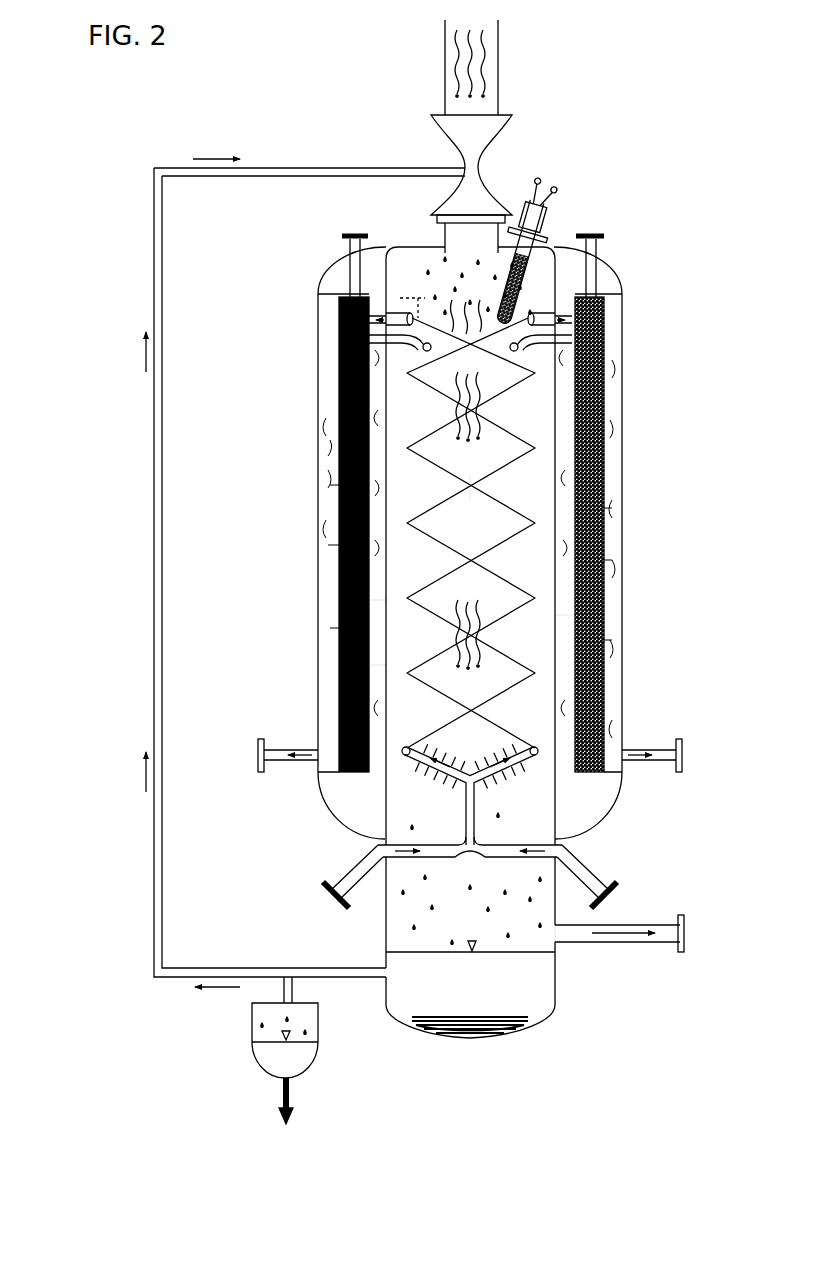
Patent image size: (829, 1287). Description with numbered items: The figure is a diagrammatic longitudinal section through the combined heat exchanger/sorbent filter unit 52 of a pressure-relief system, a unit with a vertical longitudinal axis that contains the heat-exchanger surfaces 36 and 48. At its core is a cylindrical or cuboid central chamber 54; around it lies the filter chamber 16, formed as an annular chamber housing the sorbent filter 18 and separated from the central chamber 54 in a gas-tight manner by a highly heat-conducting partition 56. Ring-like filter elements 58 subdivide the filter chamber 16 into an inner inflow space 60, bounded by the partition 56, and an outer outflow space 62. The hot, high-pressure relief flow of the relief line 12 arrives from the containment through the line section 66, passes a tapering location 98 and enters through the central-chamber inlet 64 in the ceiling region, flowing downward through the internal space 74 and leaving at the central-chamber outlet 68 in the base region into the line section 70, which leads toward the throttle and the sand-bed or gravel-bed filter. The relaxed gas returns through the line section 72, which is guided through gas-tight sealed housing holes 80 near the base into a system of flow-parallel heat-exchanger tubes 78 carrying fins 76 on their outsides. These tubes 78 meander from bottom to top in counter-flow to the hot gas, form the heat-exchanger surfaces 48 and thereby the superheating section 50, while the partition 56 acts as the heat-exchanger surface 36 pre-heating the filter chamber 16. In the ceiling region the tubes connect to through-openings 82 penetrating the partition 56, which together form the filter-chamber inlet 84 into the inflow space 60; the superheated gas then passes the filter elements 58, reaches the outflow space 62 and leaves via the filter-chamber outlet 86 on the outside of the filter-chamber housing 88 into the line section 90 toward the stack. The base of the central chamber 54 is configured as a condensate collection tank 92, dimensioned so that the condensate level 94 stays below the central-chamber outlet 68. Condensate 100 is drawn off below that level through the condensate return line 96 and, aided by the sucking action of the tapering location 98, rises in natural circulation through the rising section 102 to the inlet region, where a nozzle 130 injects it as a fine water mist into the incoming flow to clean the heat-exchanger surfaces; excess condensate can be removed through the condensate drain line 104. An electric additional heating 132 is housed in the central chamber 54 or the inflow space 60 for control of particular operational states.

The relief line 12 is at (445, 70).
The filter chamber 16 is at (333, 405).
The sorbent filter 18 is at (602, 445).
The heat-exchanger surfaces 36 is at (385, 603).
The heat-exchanger surfaces 48 is at (537, 440).
The superheating section 50 is at (518, 407).
The heat exchanger/sorbent filter unit 52 is at (636, 164).
The central chamber 54 is at (520, 487).
The partition 56 is at (334, 627).
The filter elements 58 is at (332, 486).
The inflow space 60 is at (378, 284).
The outflow space 62 is at (330, 530).
The central-chamber inlet 64 is at (443, 236).
The line section 66 is at (498, 69).
The central-chamber outlet 68 is at (558, 938).
The line section 70 is at (655, 944).
The line section 72 is at (360, 875).
The internal space 74 is at (384, 667).
The fins 76 is at (505, 766).
The heat-exchanger tubes 78 is at (537, 345).
The housing holes 80 is at (385, 841).
The through-openings 82 is at (386, 322).
The filter-chamber inlet 84 is at (348, 299).
The filter-chamber outlet 86 is at (320, 750).
The filter-chamber housing 88 is at (335, 435).
The line section 90 is at (258, 757).
The condensate collection tank 92 is at (537, 1019).
The condensate level 94 is at (412, 953).
The condensate return line 96 is at (294, 168).
The tapering location 98 is at (465, 162).
The condensate 100 is at (468, 997).
The rising section 102 is at (154, 574).
The condensate drain line 104 is at (292, 1101).
The nozzle 130 is at (493, 216).
The electric additional heating 132 is at (545, 198).